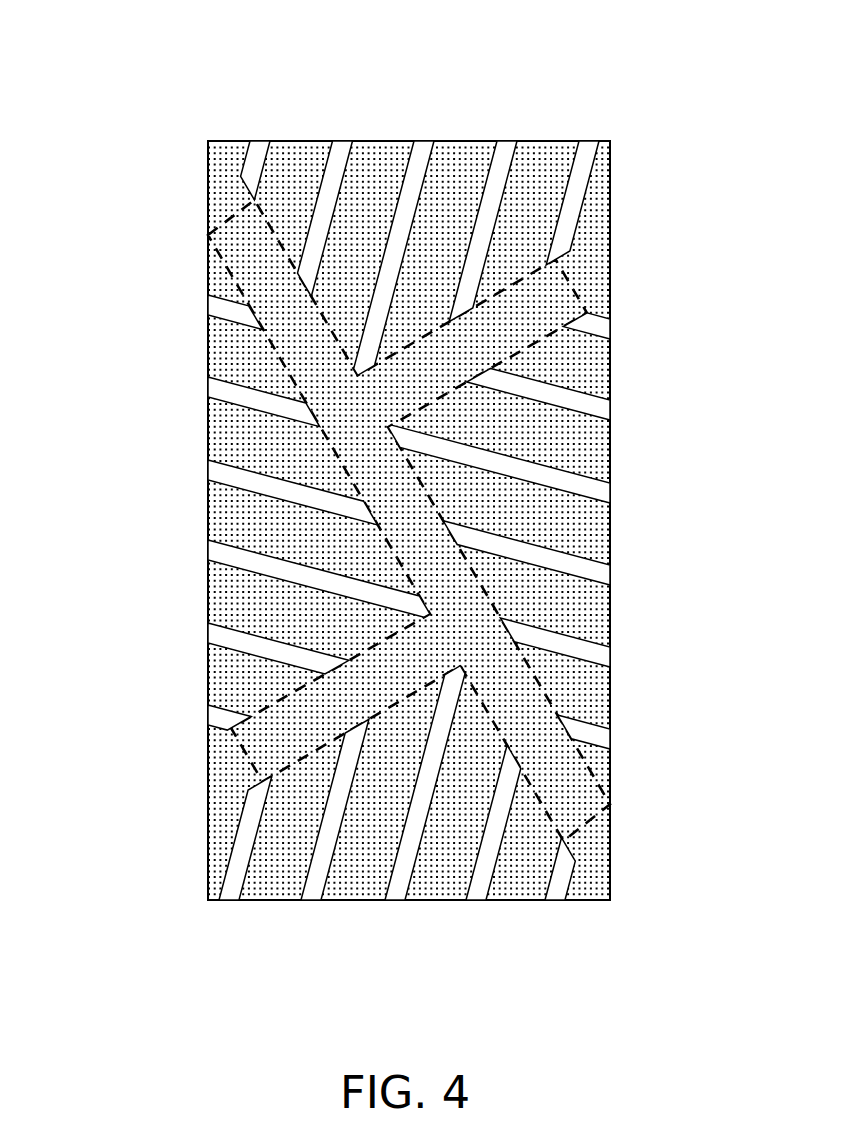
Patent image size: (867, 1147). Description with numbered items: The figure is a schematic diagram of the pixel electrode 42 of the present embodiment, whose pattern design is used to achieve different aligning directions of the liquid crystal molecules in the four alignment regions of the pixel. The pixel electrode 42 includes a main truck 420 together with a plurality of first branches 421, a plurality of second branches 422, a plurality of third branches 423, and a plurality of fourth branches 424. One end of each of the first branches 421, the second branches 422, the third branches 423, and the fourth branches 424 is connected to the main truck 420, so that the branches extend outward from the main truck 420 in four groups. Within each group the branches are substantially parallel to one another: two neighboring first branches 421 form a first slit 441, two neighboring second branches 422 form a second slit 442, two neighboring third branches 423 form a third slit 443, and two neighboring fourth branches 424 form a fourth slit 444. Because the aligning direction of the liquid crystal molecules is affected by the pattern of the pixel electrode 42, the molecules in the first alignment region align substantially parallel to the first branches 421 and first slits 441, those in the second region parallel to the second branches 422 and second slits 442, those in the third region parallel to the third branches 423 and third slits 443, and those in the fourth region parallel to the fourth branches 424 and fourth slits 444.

The pixel electrode 42 is at (672, 72).
The main truck 420 is at (580, 290).
The first branches 421 is at (373, 155).
The second branches 422 is at (228, 428).
The third branches 423 is at (350, 882).
The fourth branches 424 is at (597, 531).
The first slit 441 is at (420, 170).
The second slit 442 is at (235, 474).
The third slit 443 is at (394, 880).
The fourth slit 444 is at (586, 570).